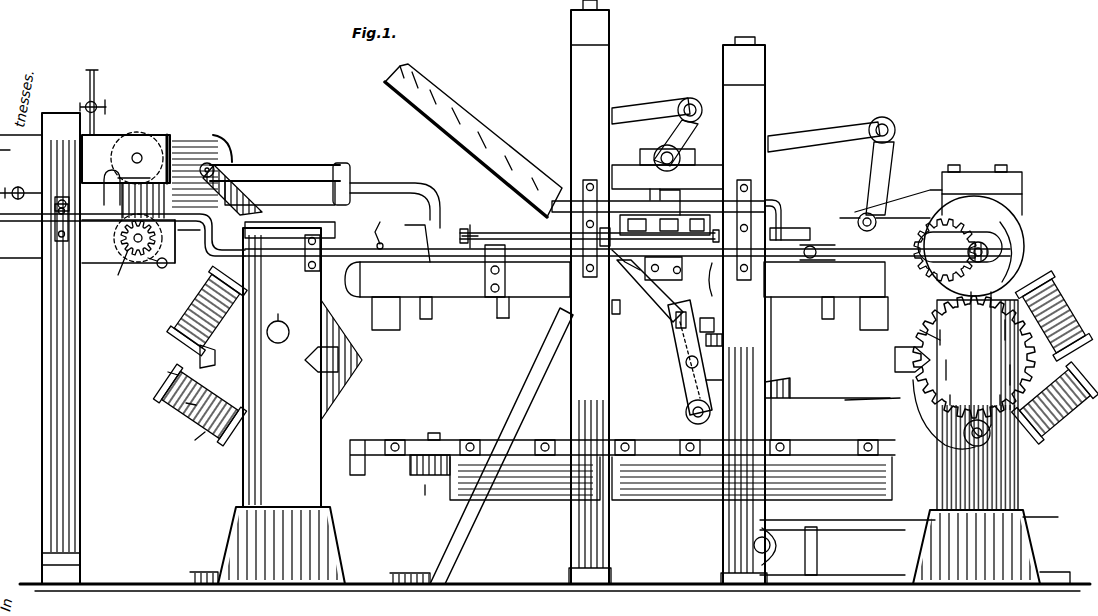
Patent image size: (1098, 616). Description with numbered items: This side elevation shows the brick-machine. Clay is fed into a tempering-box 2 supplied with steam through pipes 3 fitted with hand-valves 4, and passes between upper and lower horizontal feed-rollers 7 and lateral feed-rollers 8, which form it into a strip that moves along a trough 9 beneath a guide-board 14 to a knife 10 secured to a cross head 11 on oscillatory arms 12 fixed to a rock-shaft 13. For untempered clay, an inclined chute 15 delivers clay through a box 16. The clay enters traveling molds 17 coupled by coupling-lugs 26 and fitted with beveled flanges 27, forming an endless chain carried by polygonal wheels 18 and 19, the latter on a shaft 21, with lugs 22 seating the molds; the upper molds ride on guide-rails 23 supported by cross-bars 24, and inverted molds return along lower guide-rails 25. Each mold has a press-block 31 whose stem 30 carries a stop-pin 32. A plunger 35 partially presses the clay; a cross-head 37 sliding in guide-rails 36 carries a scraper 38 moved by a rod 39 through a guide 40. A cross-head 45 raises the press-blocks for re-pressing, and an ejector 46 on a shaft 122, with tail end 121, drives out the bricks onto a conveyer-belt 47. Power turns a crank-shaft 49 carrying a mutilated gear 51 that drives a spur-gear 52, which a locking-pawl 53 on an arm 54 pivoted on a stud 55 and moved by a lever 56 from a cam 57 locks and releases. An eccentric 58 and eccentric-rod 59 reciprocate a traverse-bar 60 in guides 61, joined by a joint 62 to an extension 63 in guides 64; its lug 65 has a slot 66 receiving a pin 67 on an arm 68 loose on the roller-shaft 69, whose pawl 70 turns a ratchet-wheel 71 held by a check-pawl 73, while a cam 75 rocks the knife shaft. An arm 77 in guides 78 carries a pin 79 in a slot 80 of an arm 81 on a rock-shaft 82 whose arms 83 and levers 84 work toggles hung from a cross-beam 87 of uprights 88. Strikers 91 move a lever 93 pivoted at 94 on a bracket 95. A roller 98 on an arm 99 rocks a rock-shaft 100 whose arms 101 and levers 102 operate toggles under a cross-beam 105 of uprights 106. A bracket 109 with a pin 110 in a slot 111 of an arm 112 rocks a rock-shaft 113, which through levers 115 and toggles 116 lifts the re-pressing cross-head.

The tempering chamber or box 2 is at (5, 153).
The steam pipes 3 is at (96, 85).
The hand-valves 4 is at (106, 108).
The upper and lower horizontal feed-rollers 7 is at (142, 136).
The lateral vertically-arranged feed-rollers 8 is at (143, 200).
The trough 9 is at (275, 186).
The knife 10 is at (378, 178).
The cross bar or head 11 is at (423, 245).
The oscillatory arms 12 is at (290, 170).
The rock-shaft 13 is at (209, 163).
The horizontal guide-board 14 is at (278, 221).
The inclined chute 15 is at (480, 168).
The box 16 is at (195, 176).
The traveling molds 17 is at (625, 356).
The hexagonal or polygonal wheels 18 is at (930, 340).
The hexagonal or polygonal wheels 19 is at (344, 360).
The shaft 21 is at (278, 328).
The lugs 22 is at (345, 358).
The upper guide-rails 23 is at (457, 279).
The cross-bars 24 is at (402, 313).
The lower guide-rails 25 is at (622, 470).
The perforated coupling-lugs 26 is at (395, 440).
The flanges 27 is at (388, 498).
The press-block stem 30 is at (497, 306).
The press-block 31 is at (298, 453).
The stop-pin or shoulders 32 is at (503, 320).
The plunger 35 is at (626, 257).
The transversely-arranged guide-rails 36 is at (720, 215).
The sliding cross-head 37 is at (705, 222).
The knife or scraper 38 is at (661, 201).
The rod 39 is at (650, 260).
The guide 40 is at (624, 307).
The cross-head 45 is at (772, 310).
The hammer or ejector 46 is at (872, 395).
The conveyer-belt 47 is at (865, 520).
The crank-shaft 49 is at (1012, 222).
The mutilated gear or partially-toothed disk 51 is at (989, 325).
The spur-gear 52 is at (974, 357).
The locking-pawl 53 is at (925, 385).
The arm 54 is at (940, 405).
The stud 55 is at (989, 457).
The lever 56 is at (1025, 255).
The cam 57 is at (1010, 240).
The eccentric 58 is at (945, 250).
The eccentric-rod 59 is at (830, 251).
The traverse-bar 60 is at (796, 236).
The guides 61 is at (587, 239).
The joint 62 is at (380, 232).
The detachable bar or extension 63 is at (270, 250).
The guides 64 is at (55, 228).
The lug 65 is at (104, 205).
The vertical slot 66 is at (104, 178).
The pin or stud 67 is at (134, 173).
The arm 68 is at (128, 241).
The roller-shaft 69 is at (187, 241).
The pawl 70 is at (125, 242).
The ratchet-wheel 71 is at (116, 270).
The check-pawl 73 is at (158, 268).
The inclined arm or cam 75 is at (238, 170).
The arm 77 is at (786, 220).
The guides 78 is at (583, 190).
The pin or stud 79 is at (656, 204).
The slot 80 is at (658, 188).
The arm 81 is at (659, 183).
The rock-shaft 82 is at (682, 153).
The rigid arms 83 is at (678, 132).
The levers 84 is at (651, 111).
The cross-beam 87 is at (590, 292).
The uprights 88 is at (489, 446).
The strikers 91 is at (500, 230).
The lever 93 is at (589, 230).
The pivot 94 is at (486, 262).
The bracket 95 is at (505, 270).
The pin or roller 98 is at (982, 190).
The arm 99 is at (885, 222).
The rock-shaft 100 is at (860, 208).
The rigid arms 101 is at (888, 160).
The levers 102 is at (824, 137).
The cross-beam 105 is at (744, 310).
The uprights 106 is at (824, 351).
The arm or bracket 109 is at (703, 279).
The pin or projection 110 is at (668, 315).
The slot 111 is at (676, 328).
The arm 112 is at (686, 365).
The rock-shaft 113 is at (686, 406).
The levers 115 is at (708, 333).
The toggles 116 is at (713, 387).
The tail end 121 is at (790, 398).
The shaft 122 is at (820, 402).